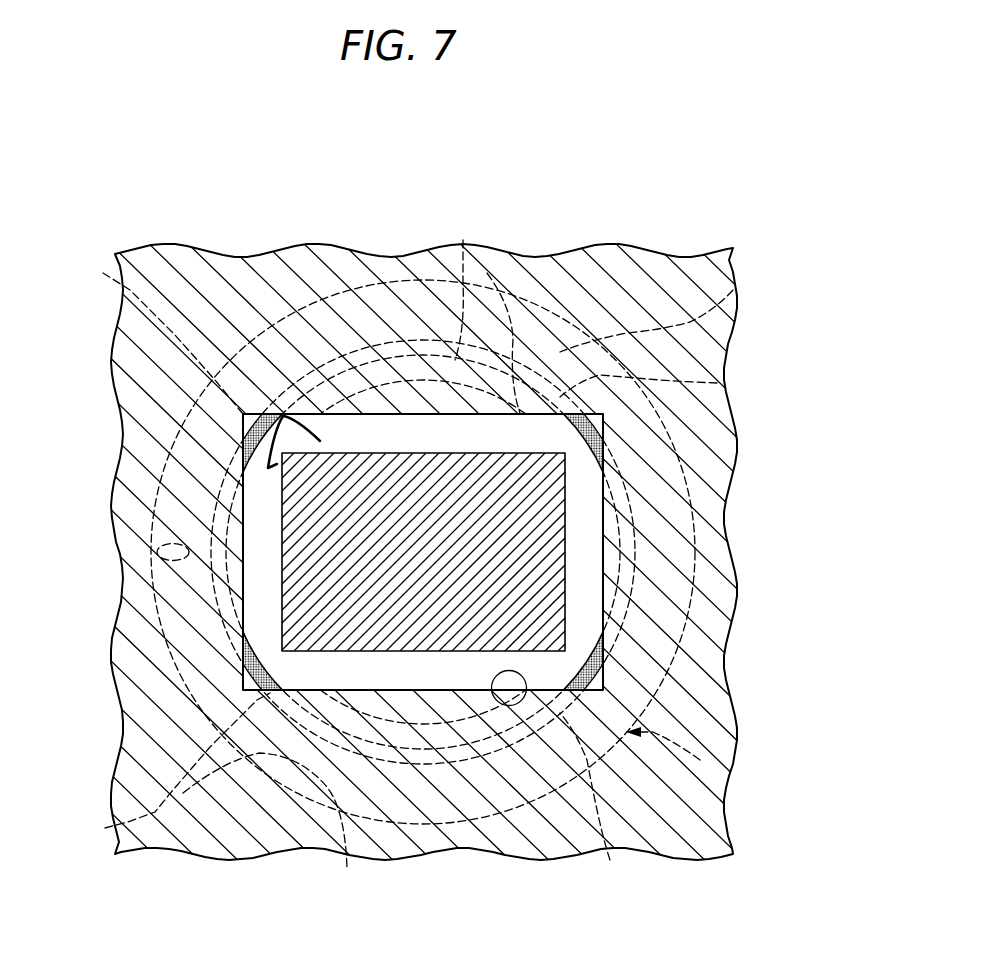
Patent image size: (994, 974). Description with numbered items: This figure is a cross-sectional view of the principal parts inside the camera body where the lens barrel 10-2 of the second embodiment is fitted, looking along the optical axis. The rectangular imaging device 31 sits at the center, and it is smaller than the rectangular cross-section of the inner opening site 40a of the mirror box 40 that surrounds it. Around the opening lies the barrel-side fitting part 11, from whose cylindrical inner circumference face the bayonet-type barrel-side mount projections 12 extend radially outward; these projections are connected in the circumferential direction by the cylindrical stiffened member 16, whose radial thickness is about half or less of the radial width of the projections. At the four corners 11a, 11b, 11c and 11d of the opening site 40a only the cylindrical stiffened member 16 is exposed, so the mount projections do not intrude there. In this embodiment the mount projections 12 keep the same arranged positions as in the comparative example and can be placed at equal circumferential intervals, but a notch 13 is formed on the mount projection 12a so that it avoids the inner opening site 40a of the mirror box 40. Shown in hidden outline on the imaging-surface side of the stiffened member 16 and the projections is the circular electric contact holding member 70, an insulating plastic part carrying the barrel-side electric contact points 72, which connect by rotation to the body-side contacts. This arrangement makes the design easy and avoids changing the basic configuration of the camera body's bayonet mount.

The mirror box 40 is at (222, 297).
The inner opening site 40a is at (512, 706).
The barrel-side fitting part 11 is at (547, 312).
The corner of the opening site 11a is at (250, 440).
The corner of the opening site 11b is at (243, 662).
The corner of the opening site 11c is at (603, 658).
The corner of the opening site 11d is at (603, 437).
The barrel-side mount projection 12 is at (650, 583).
The mount projection 12a is at (343, 370).
The notch 13 is at (103, 273).
The cylindrical stiffened member 16 is at (717, 383).
The imaging device 31 is at (533, 523).
The electric contact holding member 70 is at (733, 290).
The barrel-side electric contact point 72 is at (487, 273).
The lens barrel 10-2 is at (700, 760).